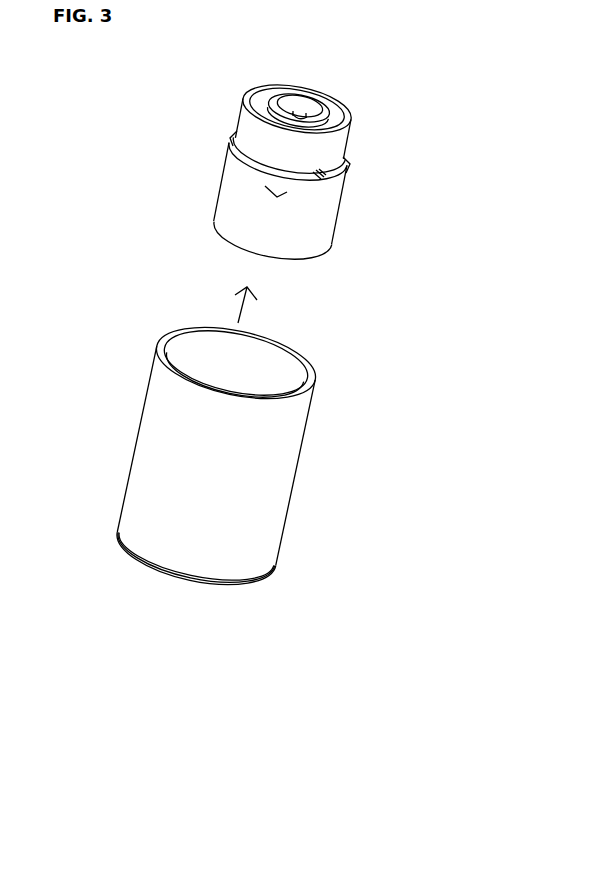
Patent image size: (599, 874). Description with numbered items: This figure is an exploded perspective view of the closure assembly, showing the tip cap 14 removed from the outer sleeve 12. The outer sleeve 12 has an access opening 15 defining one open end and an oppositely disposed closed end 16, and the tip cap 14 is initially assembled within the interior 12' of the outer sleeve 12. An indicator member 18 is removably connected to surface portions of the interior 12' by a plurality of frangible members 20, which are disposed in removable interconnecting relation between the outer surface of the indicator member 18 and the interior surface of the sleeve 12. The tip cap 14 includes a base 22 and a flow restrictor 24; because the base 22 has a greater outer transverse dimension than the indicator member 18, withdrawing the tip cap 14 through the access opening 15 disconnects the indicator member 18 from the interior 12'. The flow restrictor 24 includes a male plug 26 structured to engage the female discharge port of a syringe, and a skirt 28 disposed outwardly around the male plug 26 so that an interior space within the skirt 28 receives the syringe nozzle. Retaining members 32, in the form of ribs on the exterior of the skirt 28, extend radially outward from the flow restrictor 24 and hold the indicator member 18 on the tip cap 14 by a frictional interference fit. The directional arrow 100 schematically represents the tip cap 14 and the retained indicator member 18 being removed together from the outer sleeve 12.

The outer sleeve 12 is at (236, 466).
The interior of the outer sleeve 12' is at (236, 341).
The tip cap 14 is at (165, 185).
The access opening 15 is at (301, 366).
The closed end 16 is at (217, 582).
The indicator member 18 is at (349, 136).
The frangible members 20 is at (234, 137).
The base 22 is at (333, 238).
The flow restrictor 24 is at (303, 108).
The male plug 26 is at (300, 120).
The skirt 28 is at (292, 100).
The retaining members 32 is at (262, 113).
The directional arrow 100 is at (240, 305).